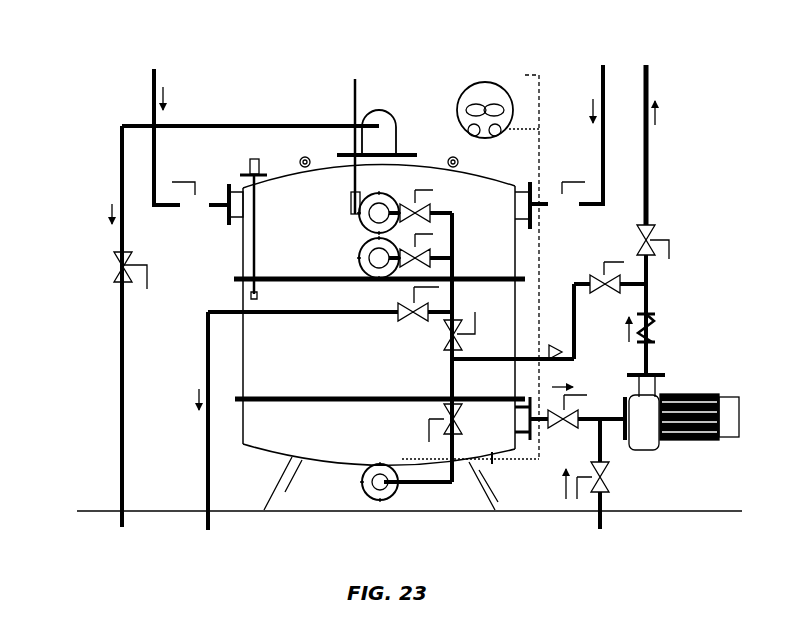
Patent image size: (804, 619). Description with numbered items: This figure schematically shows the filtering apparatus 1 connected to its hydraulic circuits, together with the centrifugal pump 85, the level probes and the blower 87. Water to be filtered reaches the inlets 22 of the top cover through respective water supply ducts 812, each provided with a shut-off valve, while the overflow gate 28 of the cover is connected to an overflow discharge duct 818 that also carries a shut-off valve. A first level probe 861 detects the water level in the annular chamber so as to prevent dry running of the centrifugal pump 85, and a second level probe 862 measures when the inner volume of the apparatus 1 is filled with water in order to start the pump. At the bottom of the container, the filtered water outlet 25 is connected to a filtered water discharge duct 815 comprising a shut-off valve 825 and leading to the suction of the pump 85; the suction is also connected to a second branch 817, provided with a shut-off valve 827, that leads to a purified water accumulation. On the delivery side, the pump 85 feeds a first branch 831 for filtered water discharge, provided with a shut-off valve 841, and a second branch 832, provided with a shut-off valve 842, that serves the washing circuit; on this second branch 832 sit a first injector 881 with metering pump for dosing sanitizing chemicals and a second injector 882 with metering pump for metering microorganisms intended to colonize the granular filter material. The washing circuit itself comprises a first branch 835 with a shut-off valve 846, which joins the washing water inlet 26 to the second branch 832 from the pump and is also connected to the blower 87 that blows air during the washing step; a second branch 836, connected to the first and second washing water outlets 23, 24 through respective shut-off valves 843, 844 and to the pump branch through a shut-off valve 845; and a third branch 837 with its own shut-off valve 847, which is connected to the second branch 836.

The filtering apparatus 1 is at (224, 247).
The inlet 22 is at (226, 193).
The first outlet 23 is at (380, 204).
The second outlet 24 is at (370, 256).
The outlet 25 is at (527, 420).
The inlet 26 is at (376, 478).
The overflow gate 28 is at (380, 110).
The centrifugal pump 85 is at (680, 397).
The blower 87 is at (500, 102).
The water supply duct 812 is at (150, 93).
The filtered water discharge duct 815 is at (545, 420).
The second branch 817 is at (602, 495).
The overflow discharge duct 818 is at (120, 302).
The shut-off valve 825 is at (569, 419).
The shut-off valve 827 is at (606, 477).
The first branch 831 is at (647, 178).
The second branch 832 is at (648, 290).
The first branch 835 is at (407, 484).
The second branch 836 is at (452, 236).
The third branch 837 is at (445, 325).
The shut-off valve 841 is at (650, 224).
The shut-off valve 842 is at (610, 276).
The shut-off valve 843 is at (402, 203).
The shut-off valve 844 is at (420, 248).
The shut-off valve 845 is at (204, 522).
The shut-off valve 846 is at (445, 418).
The shut-off valve 847 is at (405, 310).
The first level probe 861 is at (254, 170).
The second level probe 862 is at (352, 137).
The first injector 881 is at (555, 343).
The second injector 882 is at (496, 350).